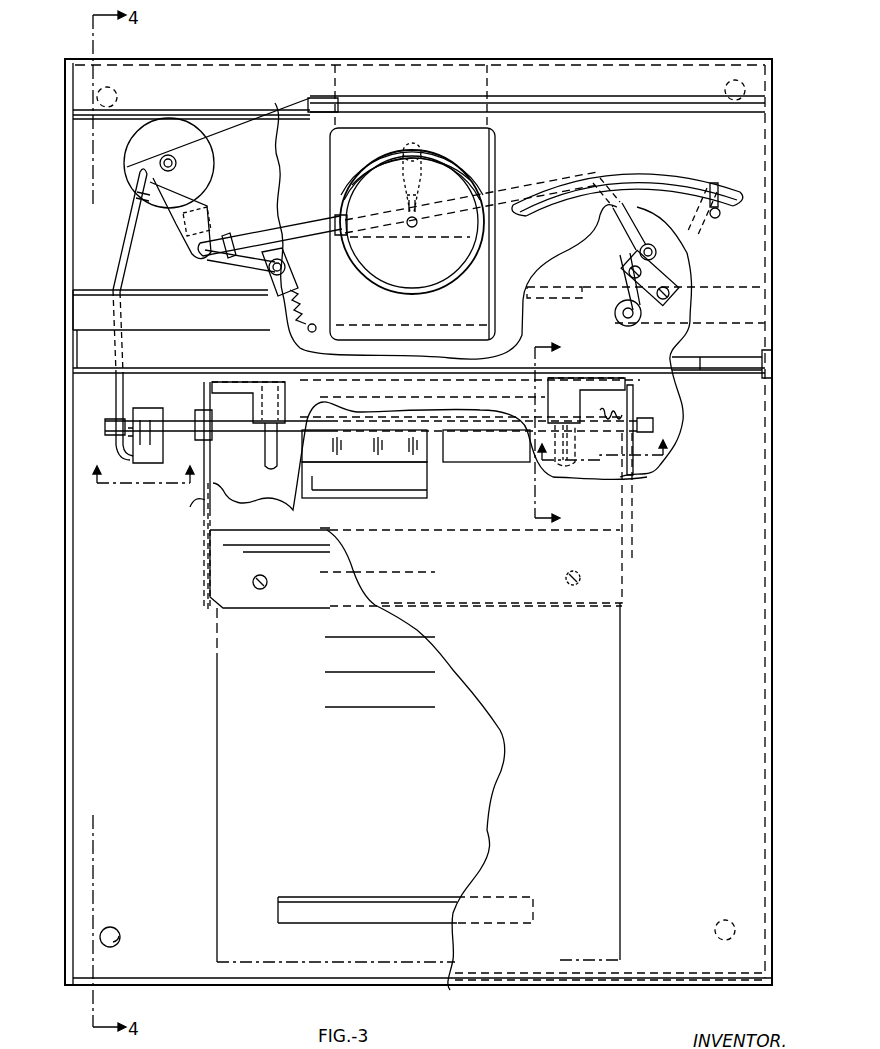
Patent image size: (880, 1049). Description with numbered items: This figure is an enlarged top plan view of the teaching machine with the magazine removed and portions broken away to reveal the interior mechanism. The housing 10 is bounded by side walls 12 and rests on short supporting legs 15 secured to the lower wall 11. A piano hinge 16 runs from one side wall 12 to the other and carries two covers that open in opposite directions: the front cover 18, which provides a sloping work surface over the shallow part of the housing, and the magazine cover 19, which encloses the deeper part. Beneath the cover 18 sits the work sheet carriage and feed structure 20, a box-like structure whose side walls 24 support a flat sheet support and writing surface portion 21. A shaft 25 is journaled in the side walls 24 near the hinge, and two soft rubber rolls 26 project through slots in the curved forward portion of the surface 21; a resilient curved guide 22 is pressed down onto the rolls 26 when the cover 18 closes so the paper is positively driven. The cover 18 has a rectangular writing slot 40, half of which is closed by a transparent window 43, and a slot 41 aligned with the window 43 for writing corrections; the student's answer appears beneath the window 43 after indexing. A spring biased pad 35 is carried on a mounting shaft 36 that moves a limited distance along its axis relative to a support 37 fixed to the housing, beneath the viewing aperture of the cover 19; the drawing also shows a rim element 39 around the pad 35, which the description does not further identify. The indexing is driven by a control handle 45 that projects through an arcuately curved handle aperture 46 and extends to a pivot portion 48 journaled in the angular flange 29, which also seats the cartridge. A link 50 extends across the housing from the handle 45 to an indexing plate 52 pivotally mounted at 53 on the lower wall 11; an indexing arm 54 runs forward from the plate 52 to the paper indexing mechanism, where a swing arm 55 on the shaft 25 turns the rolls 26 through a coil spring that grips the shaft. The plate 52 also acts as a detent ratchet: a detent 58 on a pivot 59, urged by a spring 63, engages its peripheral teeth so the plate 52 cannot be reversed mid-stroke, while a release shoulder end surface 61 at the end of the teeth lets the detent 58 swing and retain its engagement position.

The housing 10 is at (380, 455).
The lower wall 11 is at (559, 434).
The side walls 12 is at (65, 583).
The supporting legs 15 is at (120, 940).
The hinge 16 is at (722, 372).
The cover 18 is at (491, 760).
The cover 19 is at (657, 304).
The work sheet carriage and feed structure 20 is at (626, 510).
The sheet support and writing surface portion 21 is at (232, 525).
The curved guide 22 is at (210, 388).
The side walls 24 is at (206, 512).
The shaft 25 is at (105, 424).
The soft rubber rolls 26 is at (264, 460).
The angular flange 29 is at (164, 290).
The spring biased pad 35 is at (467, 251).
The mounting shaft 36 is at (450, 158).
The support 37 is at (496, 136).
The wheel rim 39 is at (376, 161).
The rectangular writing slot 40 is at (395, 493).
The slot 41 is at (503, 462).
The transparent window 43 is at (428, 459).
The control handle 45 is at (716, 219).
The arcuately curved handle aperture 46 is at (720, 185).
The pivot portion 48 is at (624, 325).
The link 50 is at (592, 180).
The indexing plate 52 is at (217, 178).
The pivot 53 is at (178, 168).
The indexing arm 54 is at (122, 240).
The swing arm 55 is at (136, 465).
The detent 58 is at (268, 265).
The pivot 59 is at (285, 273).
The release shoulder end surface 61 is at (283, 165).
The spring 63 is at (291, 332).